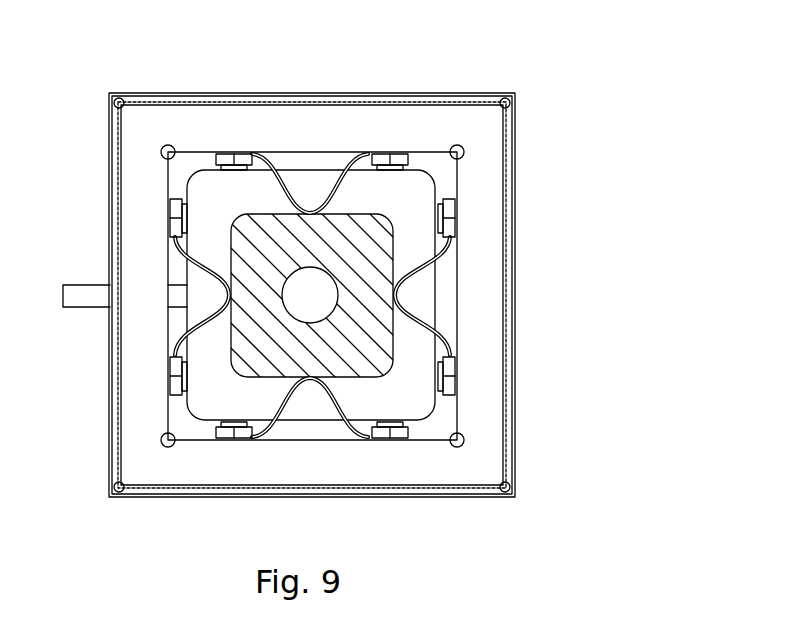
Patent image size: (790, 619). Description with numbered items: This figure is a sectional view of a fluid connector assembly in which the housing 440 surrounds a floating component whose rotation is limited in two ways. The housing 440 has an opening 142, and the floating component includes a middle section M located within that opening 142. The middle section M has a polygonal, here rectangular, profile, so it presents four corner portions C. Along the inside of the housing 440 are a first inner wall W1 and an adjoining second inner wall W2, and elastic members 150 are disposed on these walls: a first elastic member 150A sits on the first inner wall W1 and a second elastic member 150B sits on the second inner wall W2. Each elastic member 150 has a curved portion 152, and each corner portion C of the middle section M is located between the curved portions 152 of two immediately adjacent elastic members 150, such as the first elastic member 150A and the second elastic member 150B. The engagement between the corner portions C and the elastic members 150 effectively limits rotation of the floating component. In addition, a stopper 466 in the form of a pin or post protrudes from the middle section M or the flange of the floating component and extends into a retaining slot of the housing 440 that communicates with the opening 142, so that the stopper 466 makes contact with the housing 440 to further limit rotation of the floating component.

The housing 440 is at (167, 117).
The stopper 466 is at (78, 309).
The opening 142 is at (163, 180).
The middle section M is at (380, 360).
The corner portion C is at (408, 209).
The elastic members 150 is at (403, 288).
The curved portions 152 is at (343, 185).
The first elastic member 150A is at (397, 152).
The second elastic member 150B is at (455, 214).
The first inner wall W1 is at (280, 155).
The second inner wall W2 is at (457, 270).